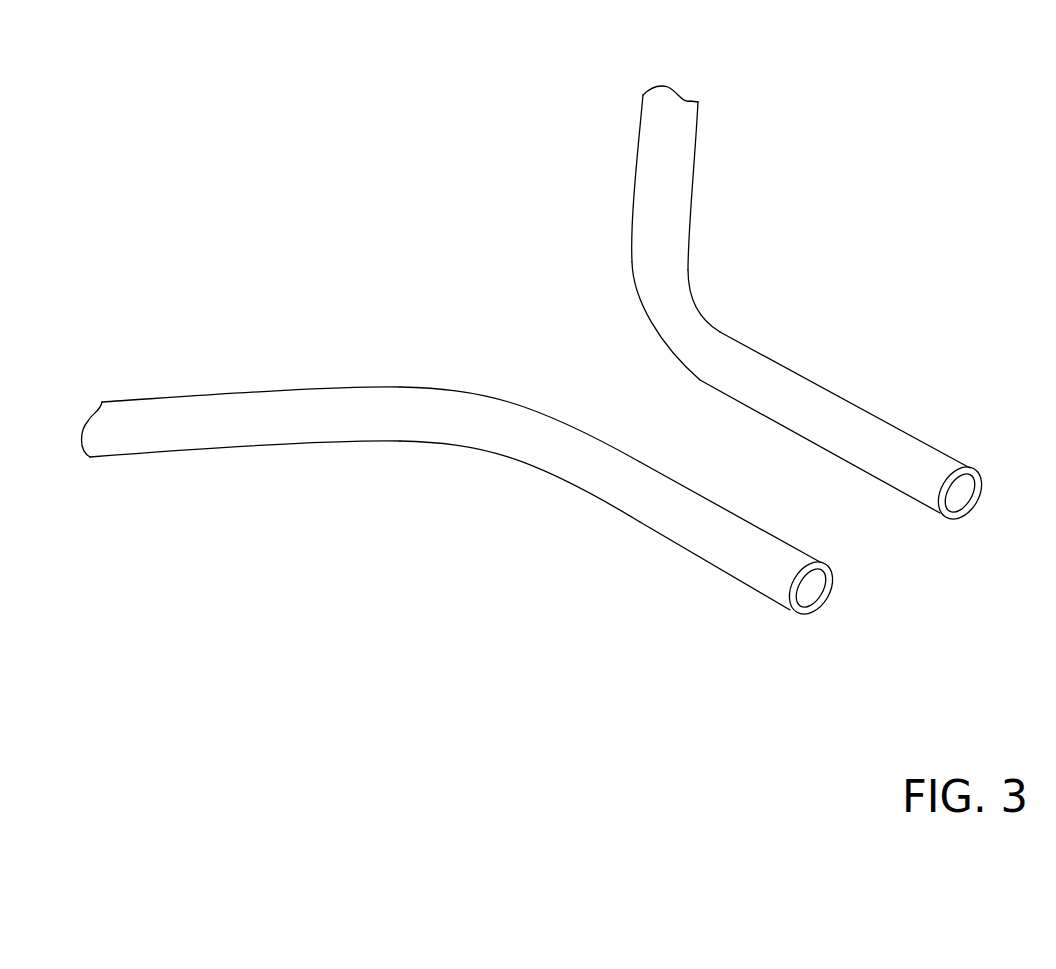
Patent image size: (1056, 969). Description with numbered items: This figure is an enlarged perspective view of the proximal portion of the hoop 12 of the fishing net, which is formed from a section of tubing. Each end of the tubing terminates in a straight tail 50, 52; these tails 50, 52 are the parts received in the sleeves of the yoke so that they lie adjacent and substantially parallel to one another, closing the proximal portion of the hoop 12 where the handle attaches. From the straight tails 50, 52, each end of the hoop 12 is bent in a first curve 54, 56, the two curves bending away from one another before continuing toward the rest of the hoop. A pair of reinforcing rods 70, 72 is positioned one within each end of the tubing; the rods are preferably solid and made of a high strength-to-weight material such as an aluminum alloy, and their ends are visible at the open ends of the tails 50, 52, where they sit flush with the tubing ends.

The hoop 12 is at (767, 83).
The straight tail 50 is at (469, 519).
The straight tail 52 is at (819, 362).
The first curve 54 is at (535, 408).
The first curve 56 is at (703, 310).
The reinforcing rod 70 is at (810, 585).
The reinforcing rod 72 is at (958, 492).